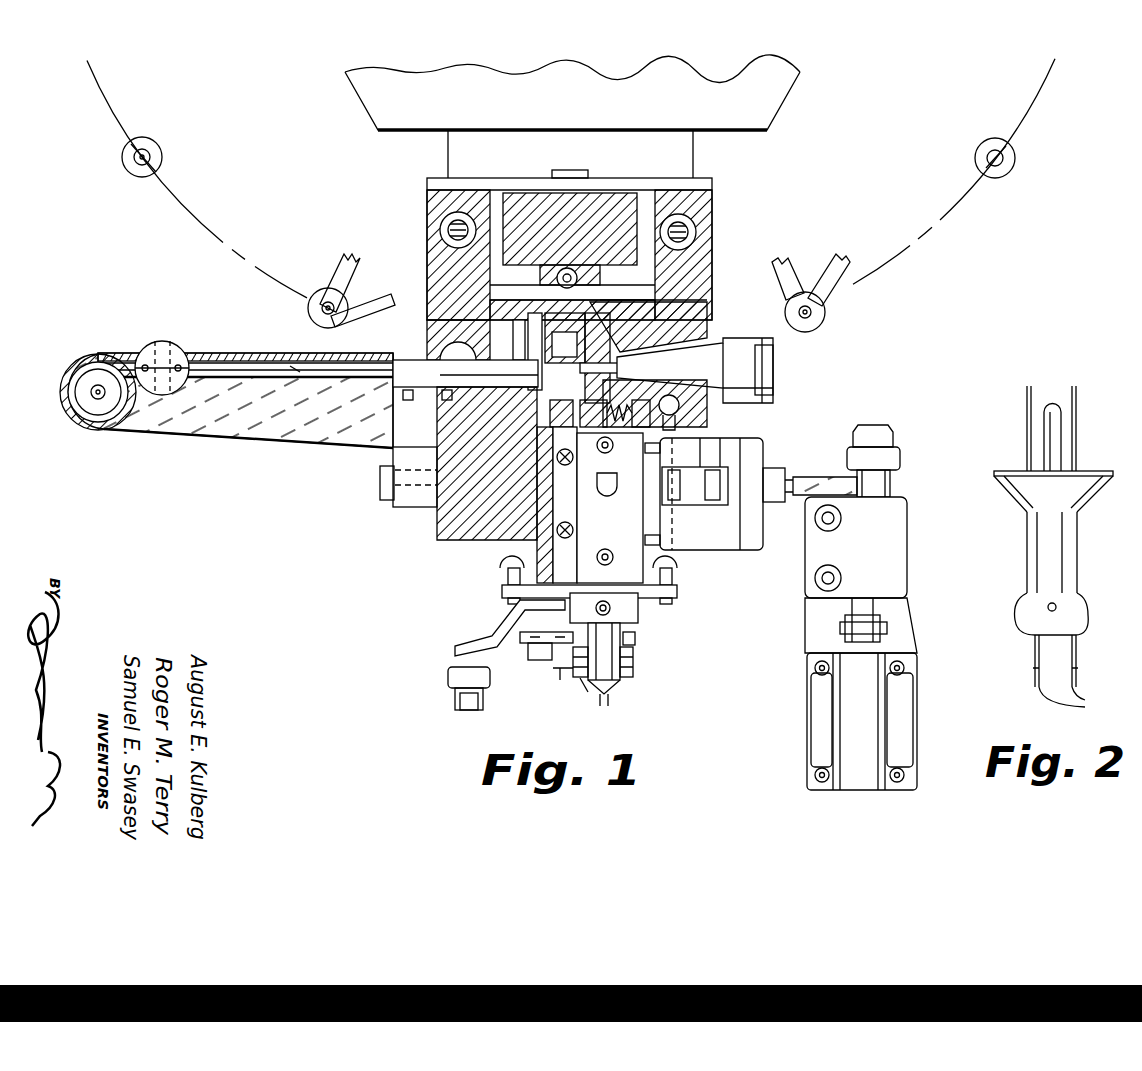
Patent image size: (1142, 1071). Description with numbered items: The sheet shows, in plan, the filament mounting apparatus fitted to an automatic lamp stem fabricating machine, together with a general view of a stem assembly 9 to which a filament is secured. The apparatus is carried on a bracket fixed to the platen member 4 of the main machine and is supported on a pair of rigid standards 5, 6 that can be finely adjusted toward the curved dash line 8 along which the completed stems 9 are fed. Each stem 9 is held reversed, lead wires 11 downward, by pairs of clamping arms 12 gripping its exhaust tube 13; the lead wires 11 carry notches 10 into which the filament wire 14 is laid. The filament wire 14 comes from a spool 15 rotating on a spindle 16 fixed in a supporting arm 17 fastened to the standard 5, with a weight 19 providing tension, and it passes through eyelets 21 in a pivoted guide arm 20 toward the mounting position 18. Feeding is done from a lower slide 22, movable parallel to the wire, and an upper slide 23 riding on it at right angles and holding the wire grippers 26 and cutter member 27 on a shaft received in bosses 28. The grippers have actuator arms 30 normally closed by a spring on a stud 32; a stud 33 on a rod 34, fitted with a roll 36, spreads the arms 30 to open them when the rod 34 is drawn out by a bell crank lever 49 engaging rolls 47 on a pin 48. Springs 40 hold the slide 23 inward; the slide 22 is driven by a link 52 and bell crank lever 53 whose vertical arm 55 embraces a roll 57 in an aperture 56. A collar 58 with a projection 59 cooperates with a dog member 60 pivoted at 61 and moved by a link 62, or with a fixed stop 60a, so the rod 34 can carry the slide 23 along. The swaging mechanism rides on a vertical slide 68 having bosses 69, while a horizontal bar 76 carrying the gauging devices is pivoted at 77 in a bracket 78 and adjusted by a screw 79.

In FIG. 1, the platen member 4 is at (770, 100).
In FIG. 1, the standard 5 is at (445, 530).
In FIG. 1, the standard 6 is at (702, 196).
In FIG. 1, the curved dash line 8 is at (962, 195).
In FIG. 1, the stem 9 is at (162, 157).
In FIG. 2, the stem 9 is at (1064, 532).
In FIG. 2, the notch 10 is at (1034, 672).
In FIG. 2, the lead wire 11 is at (1079, 701).
In FIG. 1, the clamping arm 12 is at (378, 300).
In FIG. 2, the exhaust tube 13 is at (1056, 427).
In FIG. 1, the filament wire 14 is at (126, 356).
In FIG. 1, the spool 15 is at (67, 415).
In FIG. 1, the spindle 16 is at (106, 398).
In FIG. 1, the supporting arm 17 is at (250, 428).
In FIG. 1, the mounting position 18 is at (640, 335).
In FIG. 1, the weight 19 is at (88, 378).
In FIG. 1, the guide arm 20 is at (327, 380).
In FIG. 1, the eyelet 21 is at (300, 368).
In FIG. 1, the lower slide 22 is at (708, 543).
In FIG. 1, the upper slide 23 is at (640, 608).
In FIG. 1, the wire gripper 26 is at (640, 333).
In FIG. 1, the cutter member 27 is at (619, 358).
In FIG. 1, the boss 28 is at (500, 411).
In FIG. 1, the actuator arm 30 is at (560, 510).
In FIG. 1, the stud 32 is at (574, 459).
In FIG. 1, the stud 33 is at (547, 488).
In FIG. 1, the rod 34 is at (615, 686).
In FIG. 1, the roll 36 is at (553, 480).
In FIG. 1, the spring 40 is at (494, 568).
In FIG. 1, the roll 47 is at (604, 696).
In FIG. 1, the pin 48 is at (587, 692).
In FIG. 1, the bell crank lever 49 is at (636, 640).
In FIG. 1, the link 52 is at (893, 456).
In FIG. 1, the bell crank lever 53 is at (803, 493).
In FIG. 1, the vertical arm 55 is at (680, 488).
In FIG. 1, the aperture 56 is at (712, 470).
In FIG. 1, the roll 57 is at (708, 497).
In FIG. 1, the collar 58 is at (640, 612).
In FIG. 1, the projection 59 is at (505, 614).
In FIG. 1, the dog member 60 is at (503, 647).
In FIG. 1, the fixed stop 60a is at (560, 640).
In FIG. 1, the pivot 61 is at (575, 668).
In FIG. 1, the link 62 is at (450, 678).
In FIG. 1, the slide 68 is at (548, 312).
In FIG. 1, the boss 69 is at (520, 320).
In FIG. 1, the bar 76 is at (743, 364).
In FIG. 1, the pivot 77 is at (766, 382).
In FIG. 1, the bracket 78 is at (730, 398).
In FIG. 1, the screw 79 is at (692, 360).